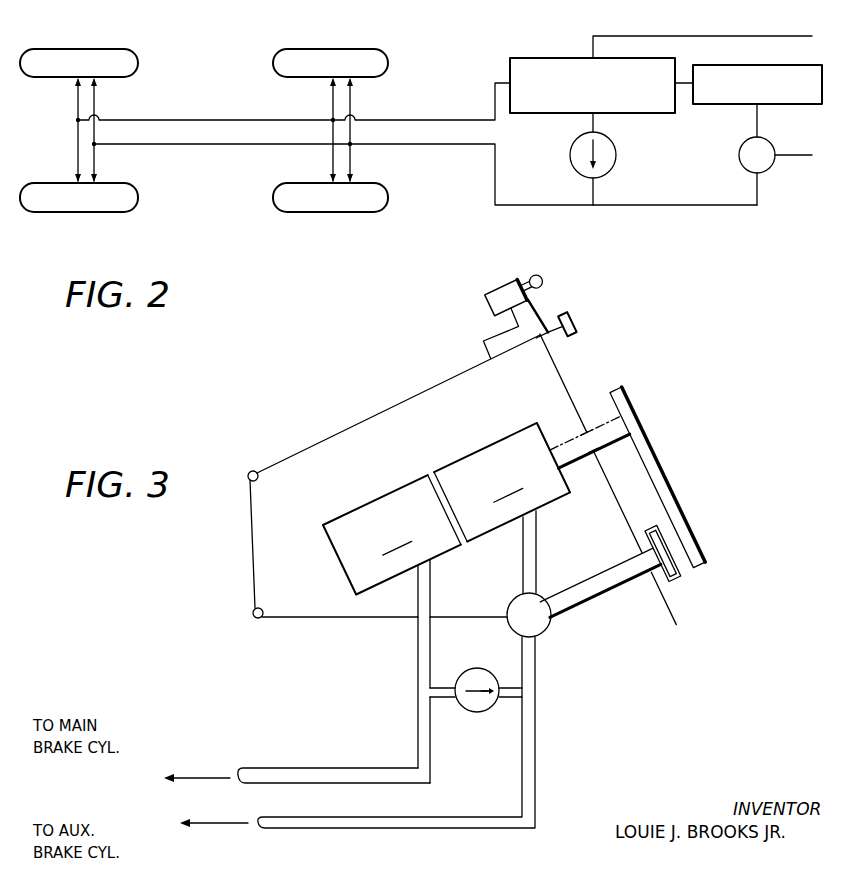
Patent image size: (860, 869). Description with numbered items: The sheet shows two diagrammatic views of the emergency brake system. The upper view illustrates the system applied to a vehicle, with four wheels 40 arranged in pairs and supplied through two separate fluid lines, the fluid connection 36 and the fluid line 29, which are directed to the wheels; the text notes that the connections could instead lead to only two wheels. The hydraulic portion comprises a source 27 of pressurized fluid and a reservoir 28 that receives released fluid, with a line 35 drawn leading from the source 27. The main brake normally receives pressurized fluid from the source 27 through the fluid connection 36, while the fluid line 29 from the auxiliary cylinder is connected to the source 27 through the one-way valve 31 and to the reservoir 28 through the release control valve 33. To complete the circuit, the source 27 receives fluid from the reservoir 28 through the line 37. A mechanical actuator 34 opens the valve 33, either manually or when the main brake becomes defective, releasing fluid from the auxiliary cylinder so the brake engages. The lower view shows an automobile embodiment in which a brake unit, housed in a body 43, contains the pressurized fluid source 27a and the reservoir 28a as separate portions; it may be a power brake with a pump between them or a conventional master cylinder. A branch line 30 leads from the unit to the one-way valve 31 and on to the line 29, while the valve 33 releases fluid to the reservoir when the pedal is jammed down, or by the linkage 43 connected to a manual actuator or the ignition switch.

In FIG. 2, the vehicle wheels 40 is at (87, 49).
In FIG. 2, the fluid connection 36 is at (410, 120).
In FIG. 3, the fluid connection 36 is at (353, 768).
In FIG. 2, the fluid line 29 is at (561, 206).
In FIG. 3, the fluid line 29 is at (386, 829).
In FIG. 2, the source of pressurized fluid 27 is at (554, 58).
In FIG. 2, the line from pressurized fluid source 35 is at (733, 36).
In FIG. 2, the reservoir 28 is at (748, 65).
In FIG. 2, the line 37 is at (689, 83).
In FIG. 2, the one-way valve 31 is at (569, 153).
In FIG. 3, the one-way valve 31 is at (493, 668).
In FIG. 2, the release control valve 33 is at (739, 156).
In FIG. 3, the release control valve 33 is at (545, 634).
In FIG. 2, the mechanical actuator 34 is at (790, 160).
In FIG. 3, the linkage system 43 is at (250, 538).
In FIG. 3, the pressurized fluid source 27a is at (392, 534).
In FIG. 3, the reservoir 28a is at (502, 482).
In FIG. 3, the branch line 30 is at (416, 647).